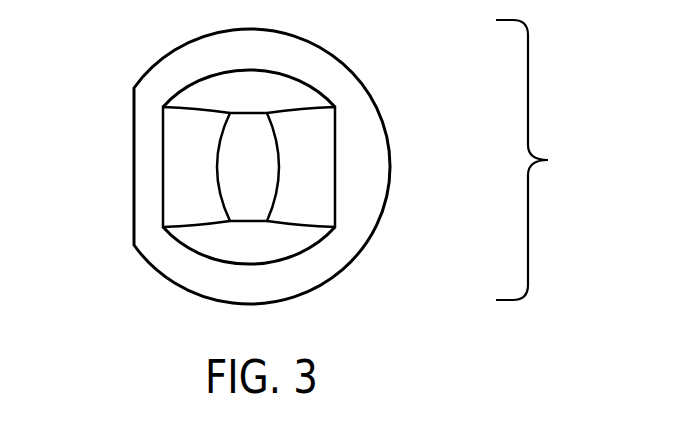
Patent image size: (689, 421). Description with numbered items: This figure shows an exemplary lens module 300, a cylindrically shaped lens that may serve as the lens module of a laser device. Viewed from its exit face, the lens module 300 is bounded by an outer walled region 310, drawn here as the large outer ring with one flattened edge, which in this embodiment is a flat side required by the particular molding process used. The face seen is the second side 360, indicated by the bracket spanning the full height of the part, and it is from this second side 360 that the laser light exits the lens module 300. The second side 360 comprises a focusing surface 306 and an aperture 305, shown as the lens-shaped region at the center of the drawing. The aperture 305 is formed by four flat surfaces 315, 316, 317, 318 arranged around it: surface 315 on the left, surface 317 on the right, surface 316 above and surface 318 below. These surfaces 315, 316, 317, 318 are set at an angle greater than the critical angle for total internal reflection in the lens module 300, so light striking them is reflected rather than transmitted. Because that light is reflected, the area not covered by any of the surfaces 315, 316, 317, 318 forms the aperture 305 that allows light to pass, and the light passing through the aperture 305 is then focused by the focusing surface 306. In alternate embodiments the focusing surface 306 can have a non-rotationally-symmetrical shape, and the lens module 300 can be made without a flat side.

The lens module 300 is at (248, 184).
The outer walled region 310 is at (369, 137).
The flat surface 315 is at (182, 180).
The flat surface 317 is at (320, 172).
The aperture 305 is at (267, 159).
The focusing surface 306 is at (267, 191).
The flat surface 316 is at (269, 102).
The flat surface 318 is at (266, 257).
The second side 360 is at (563, 160).